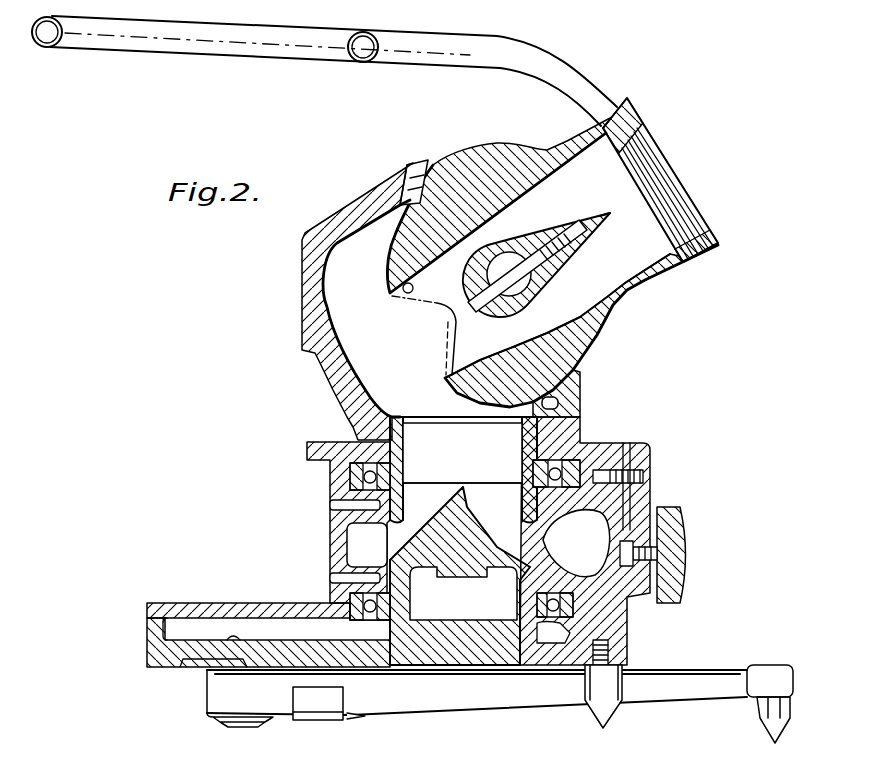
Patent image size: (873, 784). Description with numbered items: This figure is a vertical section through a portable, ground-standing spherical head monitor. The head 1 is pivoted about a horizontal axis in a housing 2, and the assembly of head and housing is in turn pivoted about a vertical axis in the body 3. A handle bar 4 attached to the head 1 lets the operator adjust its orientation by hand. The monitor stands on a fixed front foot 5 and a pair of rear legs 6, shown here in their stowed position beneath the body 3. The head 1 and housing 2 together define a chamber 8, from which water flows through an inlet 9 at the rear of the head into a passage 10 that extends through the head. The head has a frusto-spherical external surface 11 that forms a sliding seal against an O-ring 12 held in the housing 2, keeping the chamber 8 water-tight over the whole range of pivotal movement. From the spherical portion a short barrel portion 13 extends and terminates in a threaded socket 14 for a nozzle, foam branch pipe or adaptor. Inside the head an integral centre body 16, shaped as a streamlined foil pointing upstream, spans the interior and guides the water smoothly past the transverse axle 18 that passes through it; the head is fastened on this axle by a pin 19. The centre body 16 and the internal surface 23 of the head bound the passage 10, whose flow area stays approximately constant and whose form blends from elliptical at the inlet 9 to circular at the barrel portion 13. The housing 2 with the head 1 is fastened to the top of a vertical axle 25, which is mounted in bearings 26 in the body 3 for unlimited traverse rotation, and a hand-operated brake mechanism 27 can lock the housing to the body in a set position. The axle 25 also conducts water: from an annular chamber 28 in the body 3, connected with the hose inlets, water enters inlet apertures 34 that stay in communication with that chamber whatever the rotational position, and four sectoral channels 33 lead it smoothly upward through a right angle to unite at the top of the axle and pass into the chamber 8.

The head 1 is at (520, 238).
The housing 2 is at (300, 262).
The body 3 is at (472, 541).
The handle bar 4 is at (276, 68).
The front foot 5 is at (610, 708).
The rear legs 6 is at (470, 680).
The chamber 8 is at (382, 355).
The inlet 9 is at (447, 365).
The passage 10 is at (544, 249).
The frusto-spherical external surface 11 is at (455, 168).
The O-ring 12 is at (405, 182).
The barrel portion 13 is at (683, 266).
The threaded socket 14 is at (630, 112).
The centre body 16 is at (568, 235).
The axle 18 is at (524, 290).
The pin 19 is at (565, 259).
The internal surface 23 is at (400, 298).
The vertical axle 25 is at (428, 592).
The bearings 26 is at (350, 475).
The brake mechanism 27 is at (668, 505).
The annular chamber 28 is at (362, 546).
The sectoral channels 33 is at (452, 511).
The inlet apertures 34 is at (395, 533).